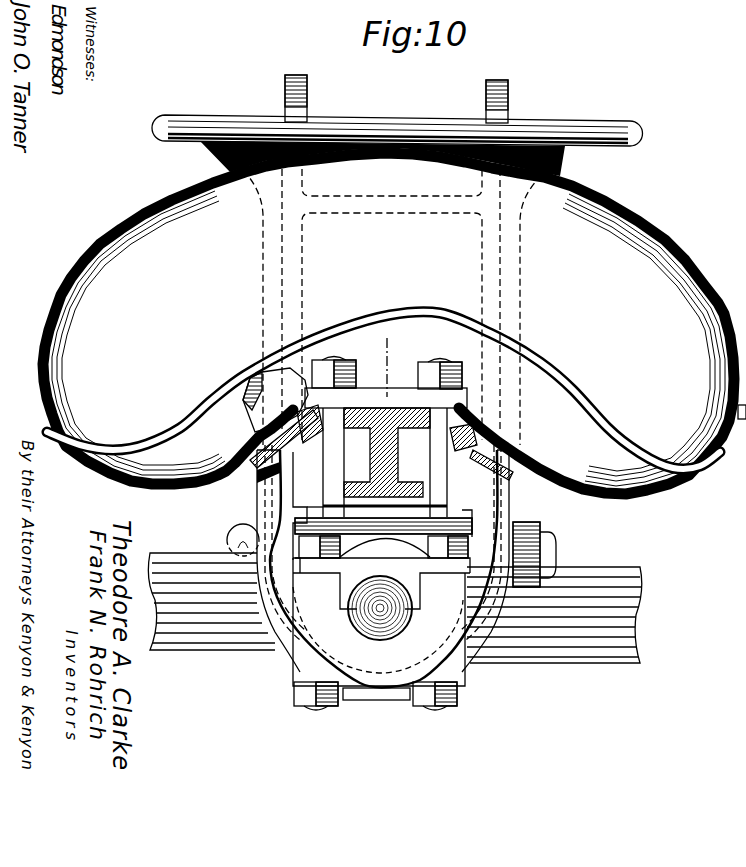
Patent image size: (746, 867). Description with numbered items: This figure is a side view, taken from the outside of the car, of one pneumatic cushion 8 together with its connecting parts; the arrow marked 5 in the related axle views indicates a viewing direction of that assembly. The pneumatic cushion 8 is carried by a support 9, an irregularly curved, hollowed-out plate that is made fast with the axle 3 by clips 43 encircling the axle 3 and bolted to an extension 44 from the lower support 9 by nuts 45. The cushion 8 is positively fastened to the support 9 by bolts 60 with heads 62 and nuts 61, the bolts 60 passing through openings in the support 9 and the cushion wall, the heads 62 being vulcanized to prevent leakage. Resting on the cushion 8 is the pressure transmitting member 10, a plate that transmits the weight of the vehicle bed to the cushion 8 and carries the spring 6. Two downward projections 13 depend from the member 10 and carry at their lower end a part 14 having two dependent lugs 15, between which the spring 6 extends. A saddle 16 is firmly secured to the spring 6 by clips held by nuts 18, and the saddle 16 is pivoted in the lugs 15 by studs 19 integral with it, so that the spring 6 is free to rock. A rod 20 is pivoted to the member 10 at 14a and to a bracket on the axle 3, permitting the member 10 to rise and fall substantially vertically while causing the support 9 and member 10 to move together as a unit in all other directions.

The axle 3 is at (344, 460).
The arrow 5 is at (741, 457).
The spring 6 is at (597, 588).
The pneumatic cushion 8 is at (630, 243).
The support 9 is at (578, 433).
The pressure transmitting member 10 is at (533, 121).
The downward projections 13 is at (263, 262).
The part 14 is at (277, 480).
The pivot 14a is at (552, 557).
The lugs 15 is at (327, 627).
The saddle 16 is at (310, 653).
The nuts 18 is at (328, 706).
The studs 19 is at (410, 627).
The rod 20 is at (240, 543).
The clips 43 is at (357, 513).
The extension 44 is at (380, 393).
The nuts 45 is at (318, 372).
The bolts 60 is at (322, 408).
The nuts 61 is at (387, 452).
The heads 62 is at (275, 400).